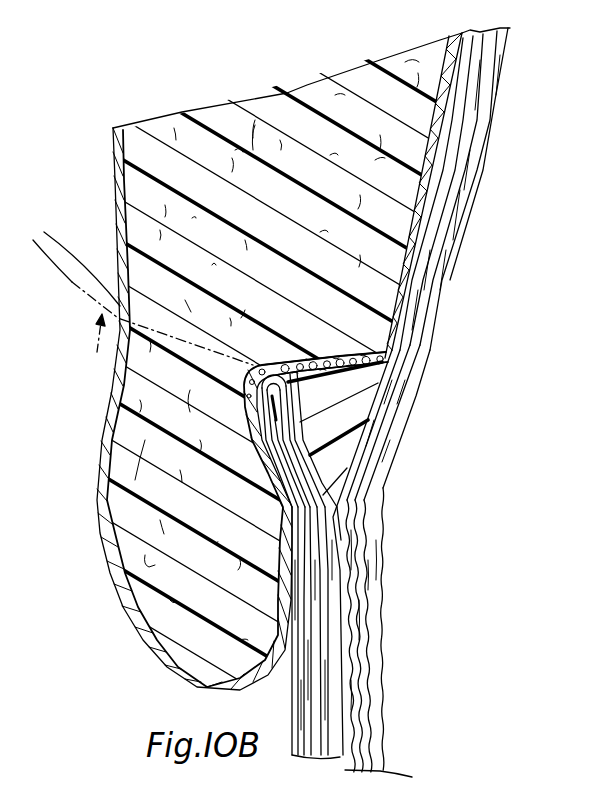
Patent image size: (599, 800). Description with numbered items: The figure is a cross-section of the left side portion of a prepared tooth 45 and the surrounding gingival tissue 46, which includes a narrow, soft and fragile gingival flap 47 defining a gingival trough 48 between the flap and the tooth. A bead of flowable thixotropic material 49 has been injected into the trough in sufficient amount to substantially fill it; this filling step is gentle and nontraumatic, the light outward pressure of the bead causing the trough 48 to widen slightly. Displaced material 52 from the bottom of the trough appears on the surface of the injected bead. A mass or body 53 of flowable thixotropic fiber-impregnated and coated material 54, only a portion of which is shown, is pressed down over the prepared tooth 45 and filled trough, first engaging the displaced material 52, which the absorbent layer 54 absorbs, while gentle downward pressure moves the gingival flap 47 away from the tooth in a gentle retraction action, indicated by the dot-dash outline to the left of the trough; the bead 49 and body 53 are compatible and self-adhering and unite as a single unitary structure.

The prepared tooth 45 is at (474, 216).
The gingival tissue 46 is at (292, 710).
The gingival flap 47 is at (264, 437).
The gingival trough 48 is at (357, 468).
The flowable thixotropic material 49 is at (366, 430).
The displaced material 52 is at (393, 355).
The moldable body 53 is at (110, 382).
The fiber-impregnated and coated material 54 is at (68, 284).